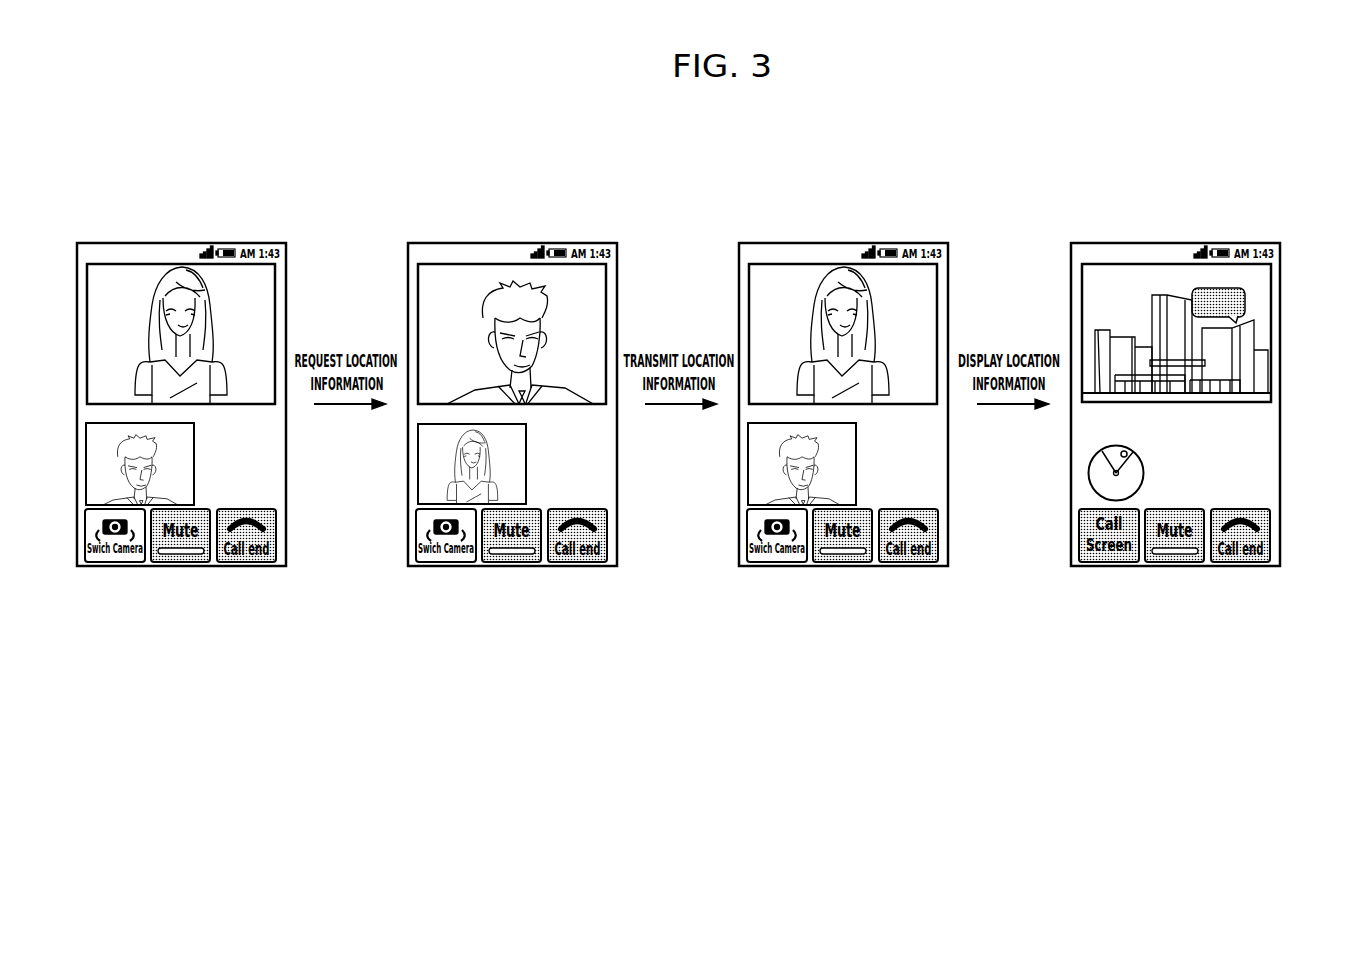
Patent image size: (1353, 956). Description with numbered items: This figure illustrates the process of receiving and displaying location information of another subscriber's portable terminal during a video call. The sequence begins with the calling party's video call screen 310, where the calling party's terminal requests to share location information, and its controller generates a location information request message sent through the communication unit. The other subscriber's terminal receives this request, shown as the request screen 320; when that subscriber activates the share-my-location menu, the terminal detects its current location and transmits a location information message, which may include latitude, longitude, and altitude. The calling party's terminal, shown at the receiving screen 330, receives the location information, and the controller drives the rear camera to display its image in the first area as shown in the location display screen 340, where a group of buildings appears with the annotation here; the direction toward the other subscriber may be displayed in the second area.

The video call screen of the calling party 310 is at (197, 243).
The location information request screen of the other subscriber 320 is at (528, 243).
The location information receiving screen of the calling party 330 is at (859, 243).
The location display screen of the calling party 340 is at (1190, 243).